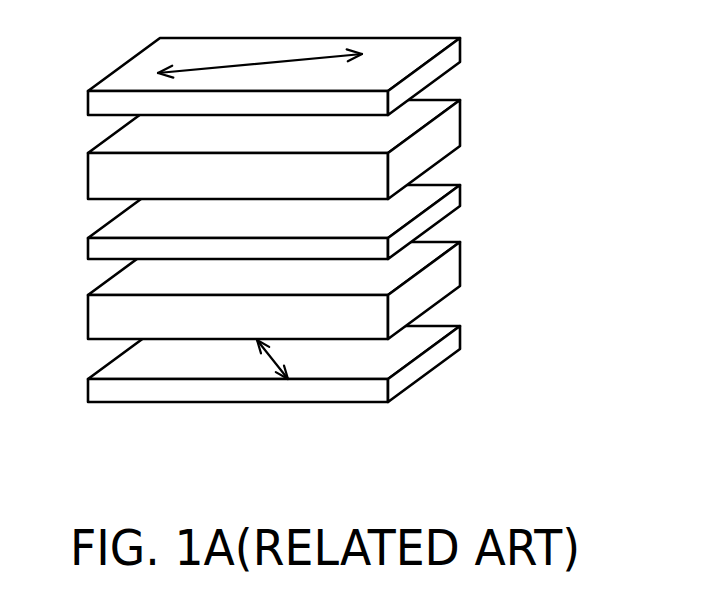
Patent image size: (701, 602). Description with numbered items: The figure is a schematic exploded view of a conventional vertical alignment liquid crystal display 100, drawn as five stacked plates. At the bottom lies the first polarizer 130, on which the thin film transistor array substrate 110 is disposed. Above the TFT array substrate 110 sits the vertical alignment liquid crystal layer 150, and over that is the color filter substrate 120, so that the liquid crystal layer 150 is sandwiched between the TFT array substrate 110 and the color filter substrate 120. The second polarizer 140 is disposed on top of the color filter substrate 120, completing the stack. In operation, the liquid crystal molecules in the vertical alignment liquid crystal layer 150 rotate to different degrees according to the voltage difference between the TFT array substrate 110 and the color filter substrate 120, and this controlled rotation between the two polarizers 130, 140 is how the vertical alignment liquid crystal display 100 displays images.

The vertical alignment liquid crystal display 100 is at (326, 248).
The thin film transistor array substrate 110 is at (450, 263).
The color filter substrate 120 is at (450, 120).
The first polarizer 130 is at (450, 345).
The second polarizer 140 is at (450, 58).
The vertical alignment liquid crystal layer 150 is at (450, 203).